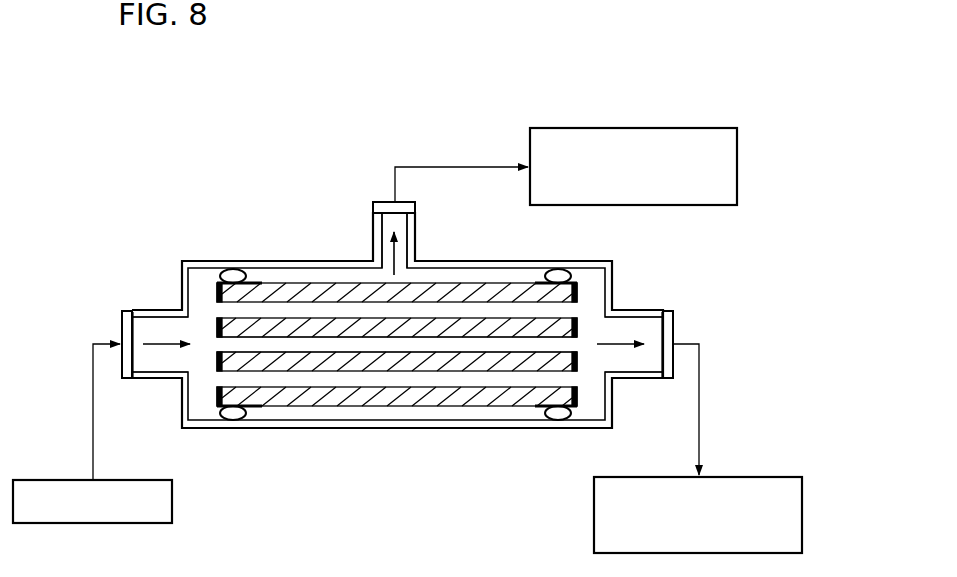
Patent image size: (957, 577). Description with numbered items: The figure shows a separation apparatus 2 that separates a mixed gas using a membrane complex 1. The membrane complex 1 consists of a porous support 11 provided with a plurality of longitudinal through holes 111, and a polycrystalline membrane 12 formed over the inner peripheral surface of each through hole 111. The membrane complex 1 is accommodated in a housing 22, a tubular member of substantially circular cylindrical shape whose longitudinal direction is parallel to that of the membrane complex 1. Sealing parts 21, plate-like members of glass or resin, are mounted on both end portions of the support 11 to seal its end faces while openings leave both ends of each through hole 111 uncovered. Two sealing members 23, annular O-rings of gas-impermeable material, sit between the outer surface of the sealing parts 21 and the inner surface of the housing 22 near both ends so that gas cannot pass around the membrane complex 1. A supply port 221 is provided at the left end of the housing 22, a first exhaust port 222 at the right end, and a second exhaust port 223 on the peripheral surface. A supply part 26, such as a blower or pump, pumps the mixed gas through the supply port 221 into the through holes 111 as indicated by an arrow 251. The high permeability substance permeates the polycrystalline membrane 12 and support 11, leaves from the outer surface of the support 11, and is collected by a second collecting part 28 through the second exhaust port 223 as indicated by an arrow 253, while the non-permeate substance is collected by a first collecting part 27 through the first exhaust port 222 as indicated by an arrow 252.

The membrane complex 1 is at (182, 425).
The separation apparatus 2 is at (145, 148).
The support 11 is at (465, 403).
The polycrystalline membrane 12 is at (377, 336).
The sealing parts 21 is at (217, 297).
The housing 22 is at (487, 261).
The sealing members 23 is at (233, 270).
The supply part 26 is at (172, 500).
The first collecting part 27 is at (594, 515).
The second collecting part 28 is at (737, 167).
The through holes 111 is at (282, 346).
The supply port 221 is at (145, 316).
The first exhaust port 222 is at (648, 316).
The second exhaust port 223 is at (377, 222).
The arrow 251 is at (155, 352).
The arrow 252 is at (630, 348).
The arrow 253 is at (393, 252).